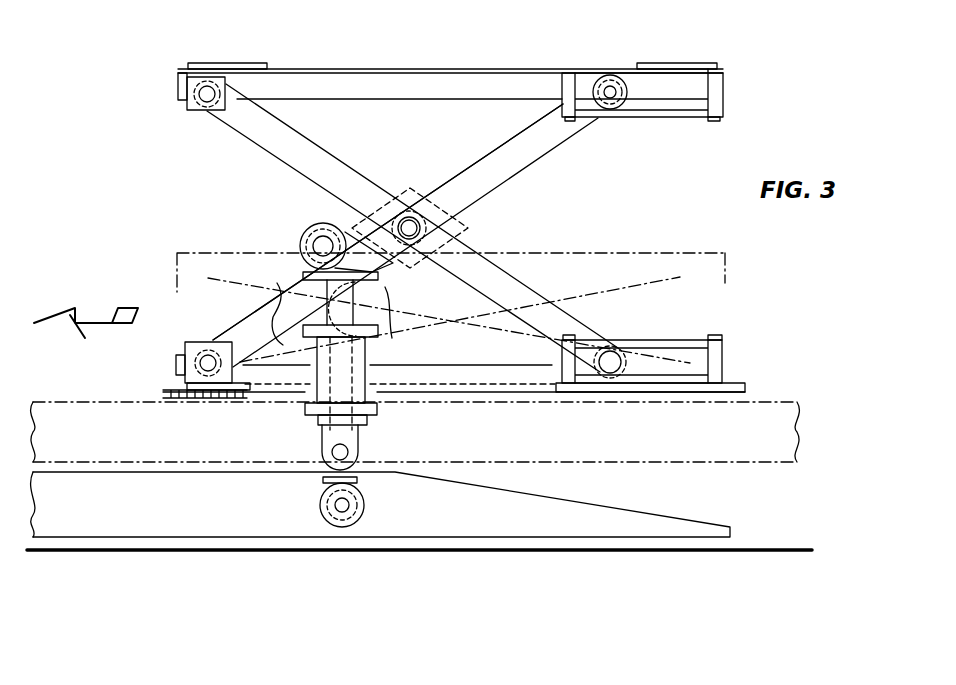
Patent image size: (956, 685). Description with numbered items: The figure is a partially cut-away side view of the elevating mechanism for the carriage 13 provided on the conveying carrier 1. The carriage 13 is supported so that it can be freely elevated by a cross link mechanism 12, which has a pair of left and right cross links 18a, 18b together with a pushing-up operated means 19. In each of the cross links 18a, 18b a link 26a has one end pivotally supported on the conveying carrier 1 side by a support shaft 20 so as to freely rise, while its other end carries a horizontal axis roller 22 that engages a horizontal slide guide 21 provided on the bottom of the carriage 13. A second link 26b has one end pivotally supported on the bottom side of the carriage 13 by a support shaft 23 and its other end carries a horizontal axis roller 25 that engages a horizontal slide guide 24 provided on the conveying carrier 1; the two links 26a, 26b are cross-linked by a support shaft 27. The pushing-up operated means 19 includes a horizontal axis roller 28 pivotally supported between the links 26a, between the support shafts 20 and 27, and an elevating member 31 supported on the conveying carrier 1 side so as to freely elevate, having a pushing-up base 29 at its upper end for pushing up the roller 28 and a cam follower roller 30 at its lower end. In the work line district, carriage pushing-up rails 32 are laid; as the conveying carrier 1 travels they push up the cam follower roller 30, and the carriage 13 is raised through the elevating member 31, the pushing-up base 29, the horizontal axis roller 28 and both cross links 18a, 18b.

The conveying carrier 1 is at (762, 400).
The cross link mechanism 12 is at (362, 188).
The carriage 13 is at (528, 68).
The cross link 18a is at (352, 186).
The cross link 18b is at (388, 222).
The pushing-up operated means 19 is at (380, 437).
The support shaft 20 is at (197, 365).
The horizontal slide guide 21 is at (659, 118).
The horizontal axis roller 22 is at (623, 117).
The support shaft 23 is at (186, 108).
The horizontal slide guide 24 is at (678, 342).
The horizontal axis roller 25 is at (636, 347).
The link 26a is at (494, 182).
The link 26b is at (357, 180).
The support shaft 27 is at (413, 212).
The horizontal axis roller 28 is at (304, 236).
The pushing-up base 29 is at (380, 280).
The cam follower roller 30 is at (320, 505).
The elevating member 31 is at (383, 330).
The carriage pushing-up rail 32 is at (404, 514).